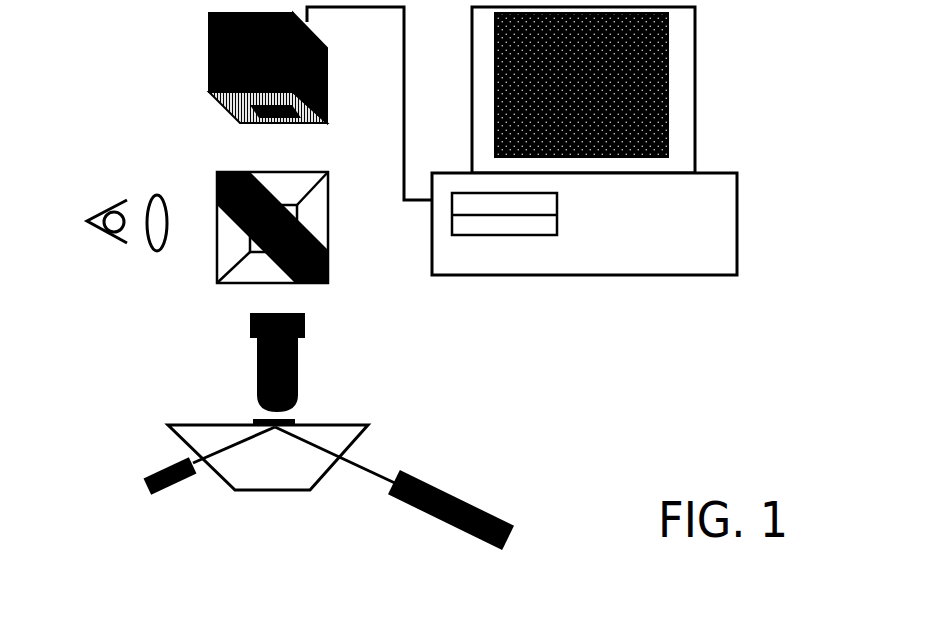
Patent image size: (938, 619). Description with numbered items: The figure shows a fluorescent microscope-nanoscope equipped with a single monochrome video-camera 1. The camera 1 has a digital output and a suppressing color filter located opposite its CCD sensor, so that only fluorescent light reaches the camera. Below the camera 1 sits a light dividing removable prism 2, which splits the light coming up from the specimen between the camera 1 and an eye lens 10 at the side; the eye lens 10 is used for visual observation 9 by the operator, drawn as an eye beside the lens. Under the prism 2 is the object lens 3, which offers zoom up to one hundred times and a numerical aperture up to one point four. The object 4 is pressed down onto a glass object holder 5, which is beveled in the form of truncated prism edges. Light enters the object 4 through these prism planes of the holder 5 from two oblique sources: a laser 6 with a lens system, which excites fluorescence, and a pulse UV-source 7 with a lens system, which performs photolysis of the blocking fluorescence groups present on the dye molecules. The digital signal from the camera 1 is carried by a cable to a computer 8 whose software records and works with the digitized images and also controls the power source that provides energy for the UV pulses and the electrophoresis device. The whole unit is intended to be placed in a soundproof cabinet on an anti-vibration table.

The monochrome video-camera 1 is at (333, 99).
The light dividing removable prism 2 is at (338, 167).
The object lens 3 is at (310, 327).
The object 4 is at (301, 416).
The glass object holder 5 is at (376, 416).
The laser 6 is at (444, 482).
The pulse UV-source 7 is at (149, 495).
The computer 8 is at (431, 280).
The visual observation 9 is at (105, 191).
The eye lens 10 is at (206, 168).